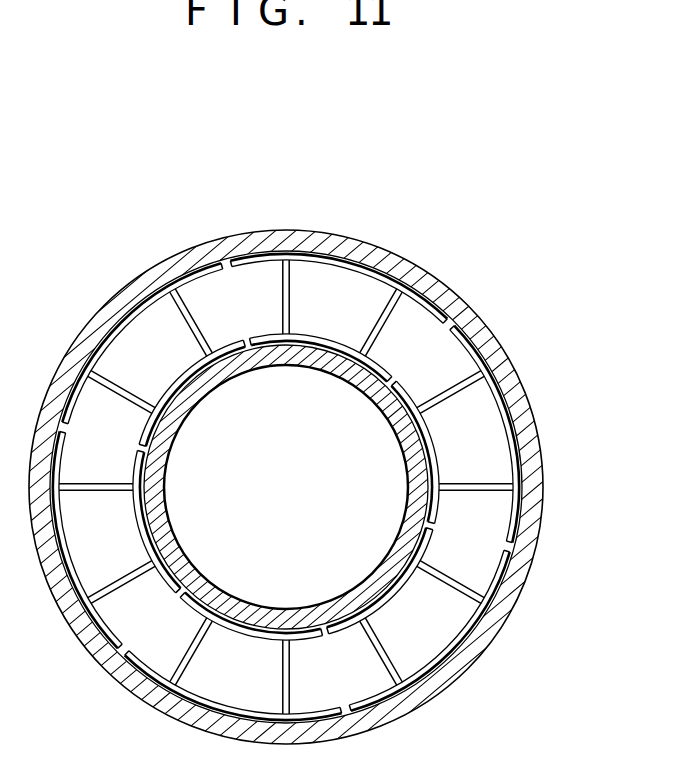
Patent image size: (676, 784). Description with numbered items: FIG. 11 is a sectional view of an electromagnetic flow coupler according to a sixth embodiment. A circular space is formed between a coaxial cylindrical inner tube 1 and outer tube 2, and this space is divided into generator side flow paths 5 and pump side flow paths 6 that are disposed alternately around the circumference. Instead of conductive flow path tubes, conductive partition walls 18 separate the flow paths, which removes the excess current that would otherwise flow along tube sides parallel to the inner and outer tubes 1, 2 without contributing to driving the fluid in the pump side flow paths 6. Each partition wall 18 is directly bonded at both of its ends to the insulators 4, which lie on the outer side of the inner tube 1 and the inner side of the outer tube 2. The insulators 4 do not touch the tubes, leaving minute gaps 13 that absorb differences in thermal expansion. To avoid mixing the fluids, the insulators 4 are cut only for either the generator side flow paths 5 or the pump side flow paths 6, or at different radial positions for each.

The inner tube 1 is at (345, 600).
The outer tube 2 is at (126, 304).
The insulator 4 is at (459, 337).
The generator side flow path 5 is at (443, 368).
The pump side flow path 6 is at (470, 437).
The gap 13 is at (251, 253).
The conductive partition wall 18 is at (400, 657).